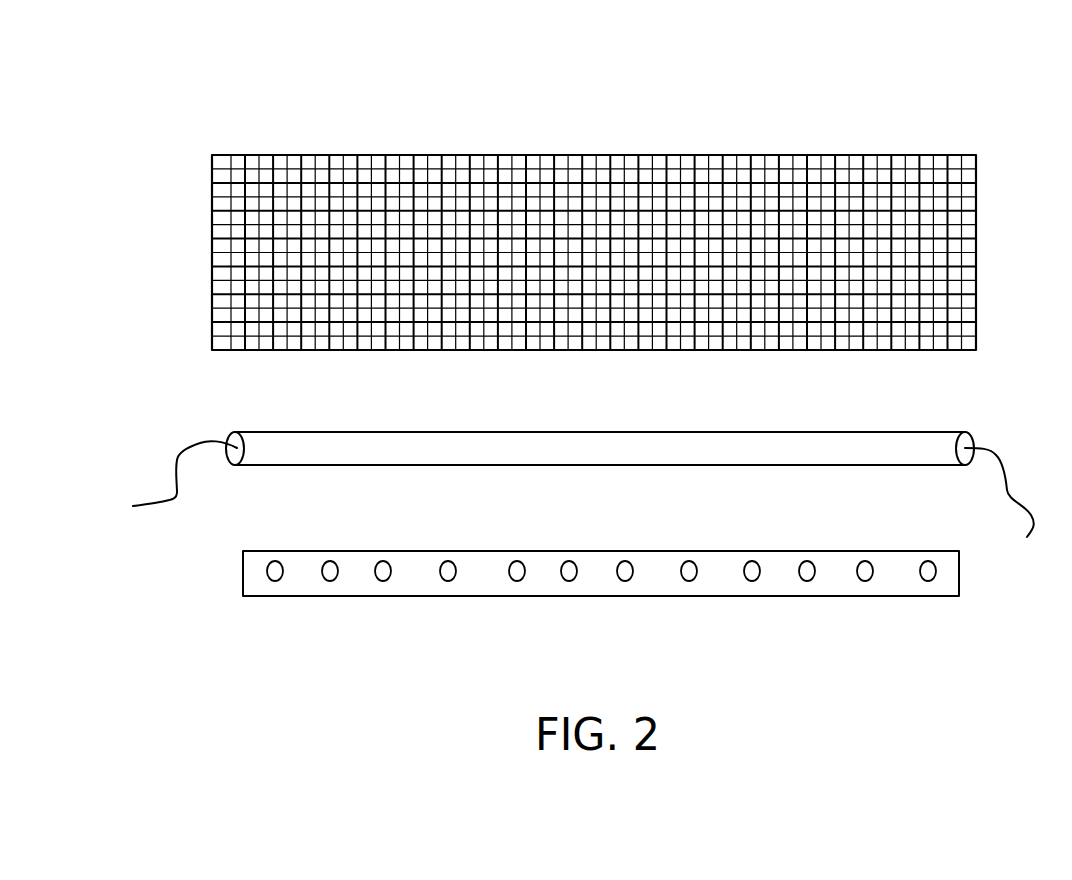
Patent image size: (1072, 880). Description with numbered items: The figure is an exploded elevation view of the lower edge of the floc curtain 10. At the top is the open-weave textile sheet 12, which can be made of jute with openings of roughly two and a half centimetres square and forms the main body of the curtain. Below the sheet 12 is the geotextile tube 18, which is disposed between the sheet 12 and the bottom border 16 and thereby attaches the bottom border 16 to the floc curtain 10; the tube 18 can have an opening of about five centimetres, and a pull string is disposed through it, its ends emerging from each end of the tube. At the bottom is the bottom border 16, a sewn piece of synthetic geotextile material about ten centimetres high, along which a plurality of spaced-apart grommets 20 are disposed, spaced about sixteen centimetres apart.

The floc curtain 10 is at (984, 92).
The open-weave textile sheet 12 is at (714, 155).
The bottom border 16 is at (601, 607).
The geotextile tube 18 is at (908, 432).
The grommets 20 is at (517, 581).